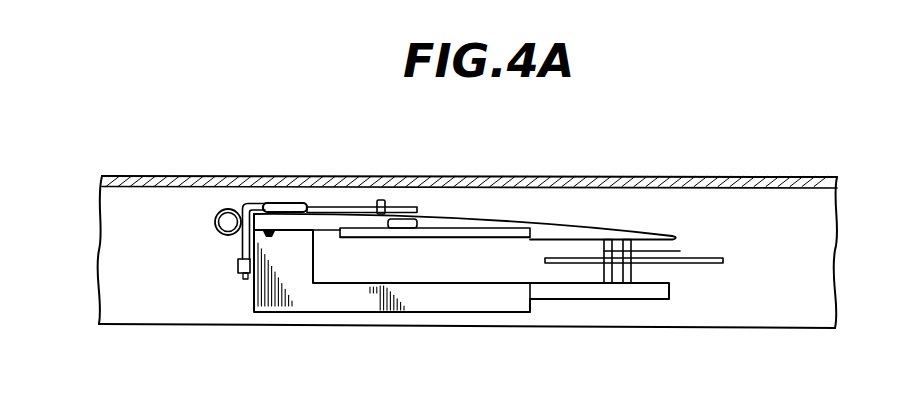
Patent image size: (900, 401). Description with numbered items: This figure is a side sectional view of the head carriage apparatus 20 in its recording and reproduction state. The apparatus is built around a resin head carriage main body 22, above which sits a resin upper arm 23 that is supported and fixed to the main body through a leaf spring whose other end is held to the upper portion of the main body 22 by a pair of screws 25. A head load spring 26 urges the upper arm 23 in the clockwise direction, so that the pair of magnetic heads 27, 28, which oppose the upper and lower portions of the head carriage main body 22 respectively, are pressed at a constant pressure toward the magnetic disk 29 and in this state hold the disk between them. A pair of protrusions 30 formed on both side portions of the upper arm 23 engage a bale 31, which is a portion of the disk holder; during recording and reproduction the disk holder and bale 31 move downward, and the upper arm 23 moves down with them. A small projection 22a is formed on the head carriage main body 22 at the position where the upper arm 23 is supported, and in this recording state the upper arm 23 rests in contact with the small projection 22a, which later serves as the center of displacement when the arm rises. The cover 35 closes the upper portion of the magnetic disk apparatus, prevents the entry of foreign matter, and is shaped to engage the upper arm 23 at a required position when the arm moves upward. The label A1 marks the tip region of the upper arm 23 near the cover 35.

The head carriage apparatus 20 is at (590, 111).
The head carriage main body 22 is at (517, 303).
The small projection 22a is at (268, 236).
The upper arm 23 is at (514, 220).
The screws 25 is at (287, 204).
The head load spring 26 is at (214, 224).
The magnetic head 27 is at (604, 251).
The magnetic head 28 is at (625, 274).
The magnetic disk 29 is at (723, 263).
The protrusions 30 is at (398, 219).
The bale 31 is at (442, 240).
The cover 35 is at (583, 177).
The direction arrow A1 is at (695, 230).